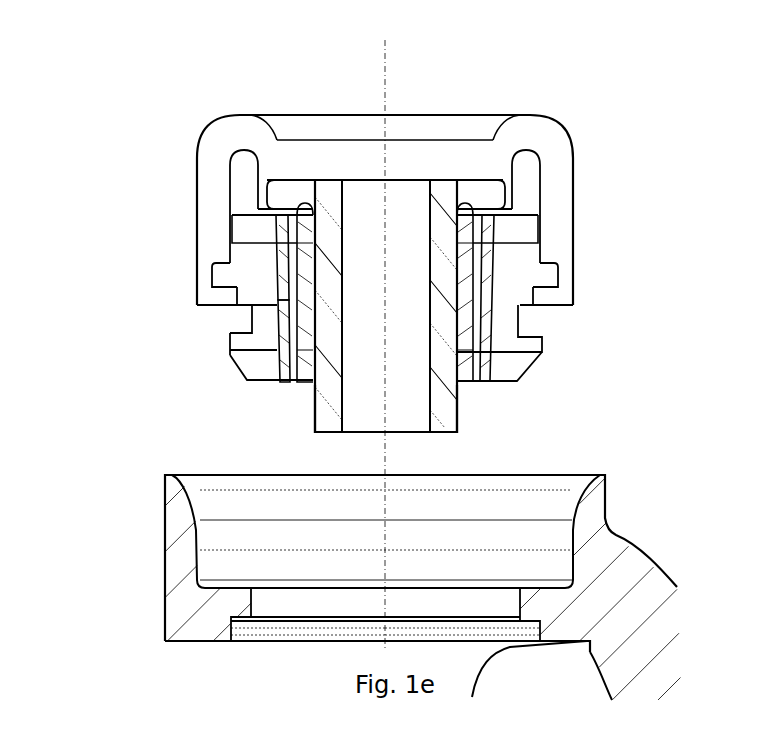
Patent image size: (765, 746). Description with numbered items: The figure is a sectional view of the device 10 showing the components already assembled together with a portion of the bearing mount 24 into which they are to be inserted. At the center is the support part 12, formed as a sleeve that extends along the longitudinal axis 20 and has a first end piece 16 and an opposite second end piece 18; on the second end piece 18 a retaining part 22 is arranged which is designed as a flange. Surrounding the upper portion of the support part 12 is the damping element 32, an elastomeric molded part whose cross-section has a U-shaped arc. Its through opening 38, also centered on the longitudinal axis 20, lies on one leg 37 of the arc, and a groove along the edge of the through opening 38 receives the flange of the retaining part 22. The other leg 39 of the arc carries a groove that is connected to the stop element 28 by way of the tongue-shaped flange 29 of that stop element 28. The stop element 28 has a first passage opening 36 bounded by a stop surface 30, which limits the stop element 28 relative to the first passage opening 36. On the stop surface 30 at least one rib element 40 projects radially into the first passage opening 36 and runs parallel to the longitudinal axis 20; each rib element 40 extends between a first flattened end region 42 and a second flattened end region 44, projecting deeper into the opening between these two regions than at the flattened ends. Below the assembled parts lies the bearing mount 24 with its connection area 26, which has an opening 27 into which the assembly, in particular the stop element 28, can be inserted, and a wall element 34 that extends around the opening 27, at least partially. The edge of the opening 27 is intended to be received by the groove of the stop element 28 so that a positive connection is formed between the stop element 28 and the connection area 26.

The device 10 is at (553, 78).
The support part 12 is at (440, 273).
The first end piece 16 is at (440, 412).
The second end piece 18 is at (323, 227).
The longitudinal axis 20 is at (385, 150).
The retaining part 22 is at (280, 190).
The bearing mount 24 is at (188, 620).
The connection area 26 is at (533, 603).
The opening 27 is at (253, 643).
The stop element 28 is at (497, 344).
The flange 29 is at (522, 322).
The stop surface 30 is at (277, 303).
The damping element 32 is at (545, 133).
The wall element 34 is at (180, 520).
The first passage opening 36 is at (247, 381).
The leg 37 is at (490, 172).
The through opening 38 is at (293, 172).
The leg 39 is at (560, 292).
The rib element 40 is at (232, 333).
The first flattened end region 42 is at (283, 258).
The second flattened end region 44 is at (248, 357).